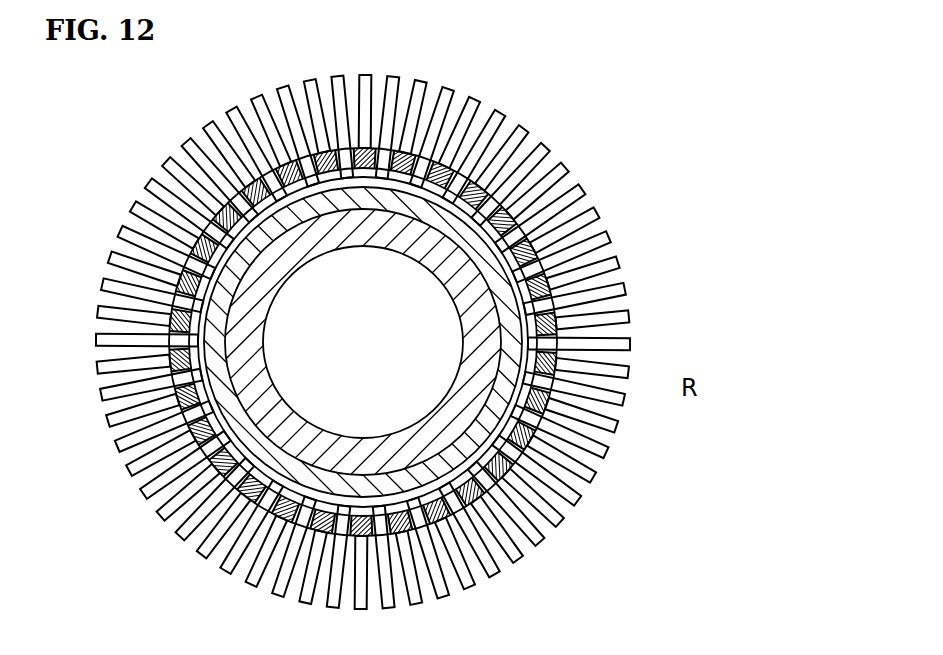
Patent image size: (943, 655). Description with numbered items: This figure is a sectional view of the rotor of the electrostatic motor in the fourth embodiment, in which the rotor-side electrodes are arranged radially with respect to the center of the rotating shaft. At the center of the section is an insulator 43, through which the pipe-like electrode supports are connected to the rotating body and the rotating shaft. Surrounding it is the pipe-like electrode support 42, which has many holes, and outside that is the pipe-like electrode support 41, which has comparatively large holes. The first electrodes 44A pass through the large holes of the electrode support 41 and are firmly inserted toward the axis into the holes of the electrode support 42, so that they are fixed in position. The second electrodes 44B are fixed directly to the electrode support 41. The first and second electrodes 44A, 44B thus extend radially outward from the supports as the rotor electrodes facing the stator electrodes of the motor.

The electrode support 41 is at (507, 226).
The electrode support 42 is at (500, 282).
The insulator 43 is at (482, 330).
The first electrodes 44A is at (542, 145).
The second electrodes 44B is at (473, 105).